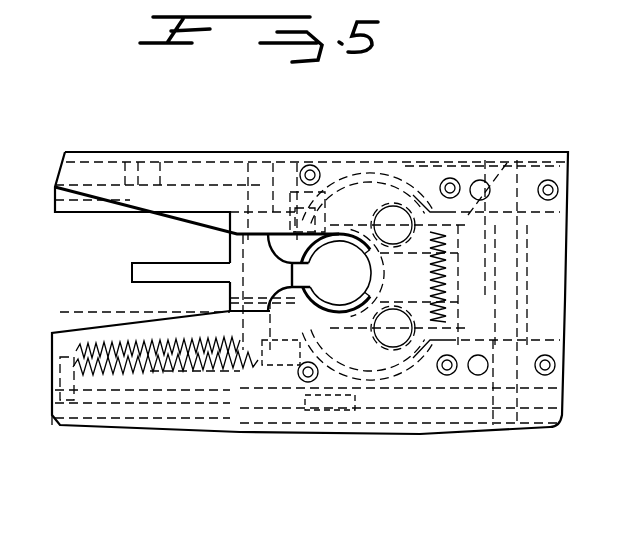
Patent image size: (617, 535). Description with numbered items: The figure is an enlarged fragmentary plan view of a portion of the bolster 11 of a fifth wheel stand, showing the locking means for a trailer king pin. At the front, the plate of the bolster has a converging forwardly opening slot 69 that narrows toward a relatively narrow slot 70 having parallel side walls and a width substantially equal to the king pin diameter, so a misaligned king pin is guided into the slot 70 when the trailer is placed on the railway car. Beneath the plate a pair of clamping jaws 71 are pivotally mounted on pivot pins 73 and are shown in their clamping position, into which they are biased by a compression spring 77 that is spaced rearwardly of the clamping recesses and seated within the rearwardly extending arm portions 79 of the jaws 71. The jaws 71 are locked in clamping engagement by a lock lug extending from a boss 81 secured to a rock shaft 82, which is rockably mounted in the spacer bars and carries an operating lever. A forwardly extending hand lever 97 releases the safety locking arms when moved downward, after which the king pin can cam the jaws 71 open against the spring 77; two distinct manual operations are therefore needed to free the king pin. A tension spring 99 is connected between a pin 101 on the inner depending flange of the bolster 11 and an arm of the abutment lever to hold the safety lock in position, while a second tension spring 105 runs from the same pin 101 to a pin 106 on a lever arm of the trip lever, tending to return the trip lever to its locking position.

The bolster 11 is at (436, 174).
The converging forwardly opening slot 69 is at (148, 215).
The relatively narrow slot 70 is at (250, 236).
The clamping jaws 71 is at (290, 258).
The pivot pins 73 is at (393, 212).
The compression spring 77 is at (445, 267).
The rearwardly extending arm portions 79 is at (508, 163).
The boss 81 is at (527, 307).
The rock shaft 82 is at (527, 322).
The hand lever 97 is at (163, 281).
The tension spring 99 is at (137, 348).
The pin 101 is at (52, 372).
The second tension spring 105 is at (130, 368).
The pin 106 is at (275, 380).